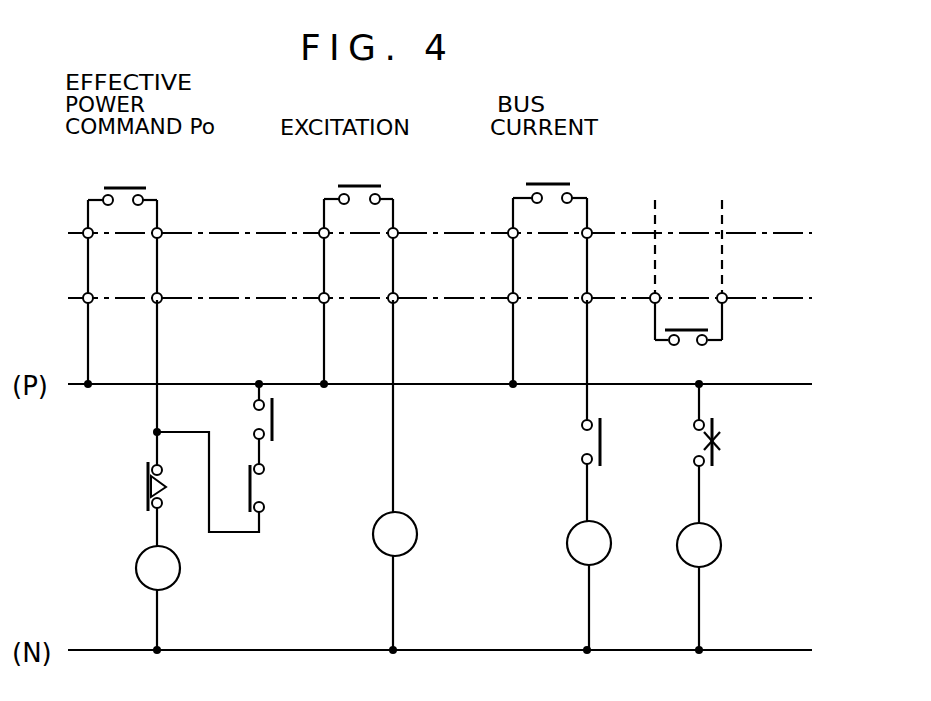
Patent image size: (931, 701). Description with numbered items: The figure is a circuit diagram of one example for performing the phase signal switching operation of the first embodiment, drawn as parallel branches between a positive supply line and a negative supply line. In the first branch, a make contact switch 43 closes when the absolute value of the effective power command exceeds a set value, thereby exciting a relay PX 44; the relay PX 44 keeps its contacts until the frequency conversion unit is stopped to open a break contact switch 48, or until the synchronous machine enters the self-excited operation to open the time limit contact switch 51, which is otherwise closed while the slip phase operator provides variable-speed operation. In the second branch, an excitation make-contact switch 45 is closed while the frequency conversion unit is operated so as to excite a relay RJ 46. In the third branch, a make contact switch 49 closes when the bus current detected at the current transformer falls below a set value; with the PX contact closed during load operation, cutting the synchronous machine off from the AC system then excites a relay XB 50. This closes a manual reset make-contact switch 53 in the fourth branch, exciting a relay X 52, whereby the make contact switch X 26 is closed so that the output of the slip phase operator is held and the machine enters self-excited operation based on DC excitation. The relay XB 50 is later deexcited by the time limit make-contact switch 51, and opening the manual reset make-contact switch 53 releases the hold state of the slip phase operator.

The make contact switch 43 is at (100, 192).
The excitation make-contact switch 45 is at (340, 192).
The make contact switch 49 is at (528, 184).
The make contact switch X 26 is at (728, 334).
The break contact switch 48 is at (265, 492).
The time limit make contact switch 51 is at (147, 490).
The relay PX 44 is at (136, 572).
The relay RJ 46 is at (418, 527).
The relay XB 50 is at (610, 532).
The relay X 52 is at (720, 530).
The manual reset make-contact switch 53 is at (699, 442).